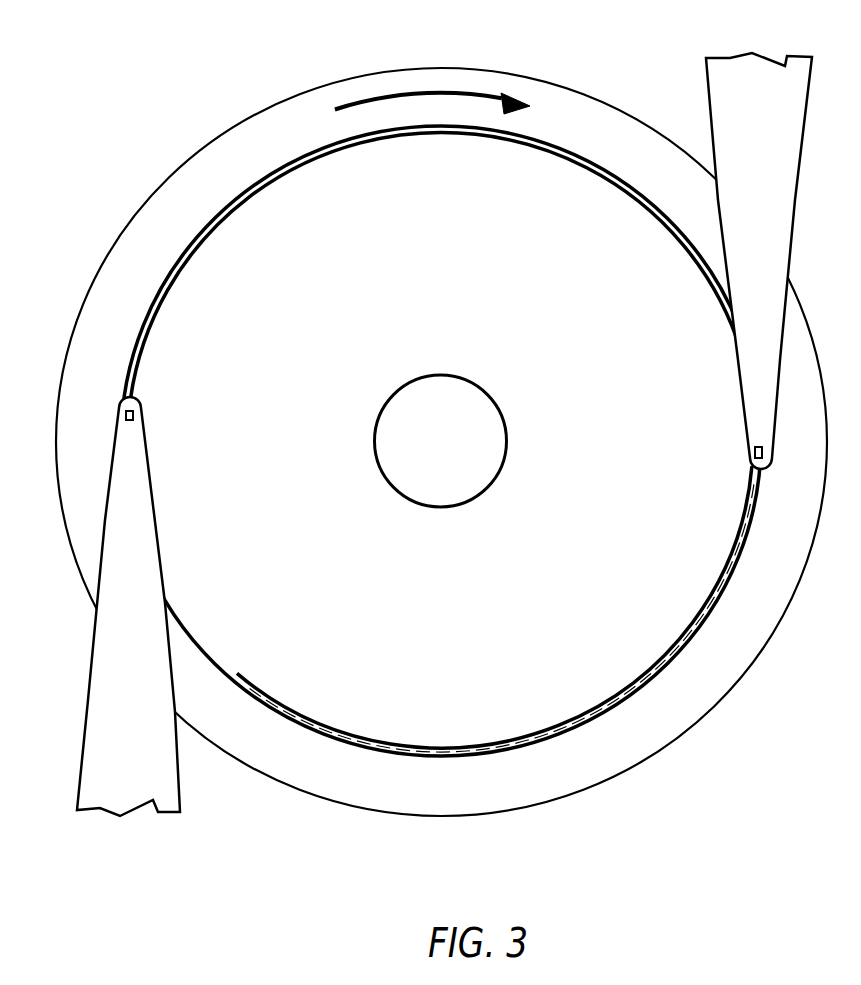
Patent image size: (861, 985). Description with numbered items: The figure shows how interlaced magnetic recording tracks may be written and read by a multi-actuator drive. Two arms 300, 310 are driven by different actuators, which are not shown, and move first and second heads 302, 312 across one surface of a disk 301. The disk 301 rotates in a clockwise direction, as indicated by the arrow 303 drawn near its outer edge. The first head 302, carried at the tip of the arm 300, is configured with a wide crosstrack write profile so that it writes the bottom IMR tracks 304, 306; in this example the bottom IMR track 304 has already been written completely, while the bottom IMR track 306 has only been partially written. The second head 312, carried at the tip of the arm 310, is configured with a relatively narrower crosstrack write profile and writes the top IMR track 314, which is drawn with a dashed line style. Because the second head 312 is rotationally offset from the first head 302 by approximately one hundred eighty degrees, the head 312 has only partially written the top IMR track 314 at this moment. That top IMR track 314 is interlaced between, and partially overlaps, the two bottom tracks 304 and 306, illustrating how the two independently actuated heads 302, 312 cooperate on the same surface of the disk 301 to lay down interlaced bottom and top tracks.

The arm 300 is at (82, 754).
The disk 301 is at (437, 816).
The first head 302 is at (137, 417).
The arrow 303 is at (431, 93).
The bottom IMR track 304 is at (190, 242).
The bottom IMR track 306 is at (218, 228).
The arm 310 is at (709, 95).
The second head 312 is at (753, 456).
The top IMR track 314 is at (448, 745).